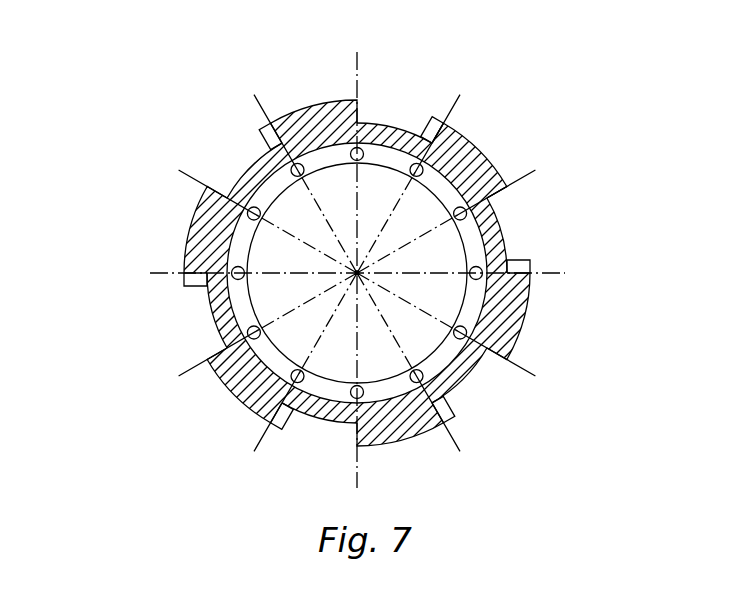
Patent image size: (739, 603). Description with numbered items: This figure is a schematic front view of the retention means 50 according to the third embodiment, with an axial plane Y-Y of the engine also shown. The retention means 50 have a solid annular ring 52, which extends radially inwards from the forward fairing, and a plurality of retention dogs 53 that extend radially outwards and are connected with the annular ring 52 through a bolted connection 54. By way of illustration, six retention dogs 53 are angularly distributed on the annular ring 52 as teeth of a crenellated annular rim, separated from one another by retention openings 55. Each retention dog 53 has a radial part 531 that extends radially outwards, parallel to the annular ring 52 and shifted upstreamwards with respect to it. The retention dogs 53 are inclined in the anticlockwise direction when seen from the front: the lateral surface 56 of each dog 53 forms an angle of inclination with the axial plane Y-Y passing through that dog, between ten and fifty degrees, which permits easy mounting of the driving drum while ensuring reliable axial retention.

The retention means 50 is at (148, 427).
The annular ring 52 is at (492, 315).
The retention dogs 53 is at (323, 122).
The radial part 531 is at (483, 174).
The bolted connection 54 is at (468, 228).
The retention openings 55 is at (229, 151).
The lateral surface 56 is at (427, 130).